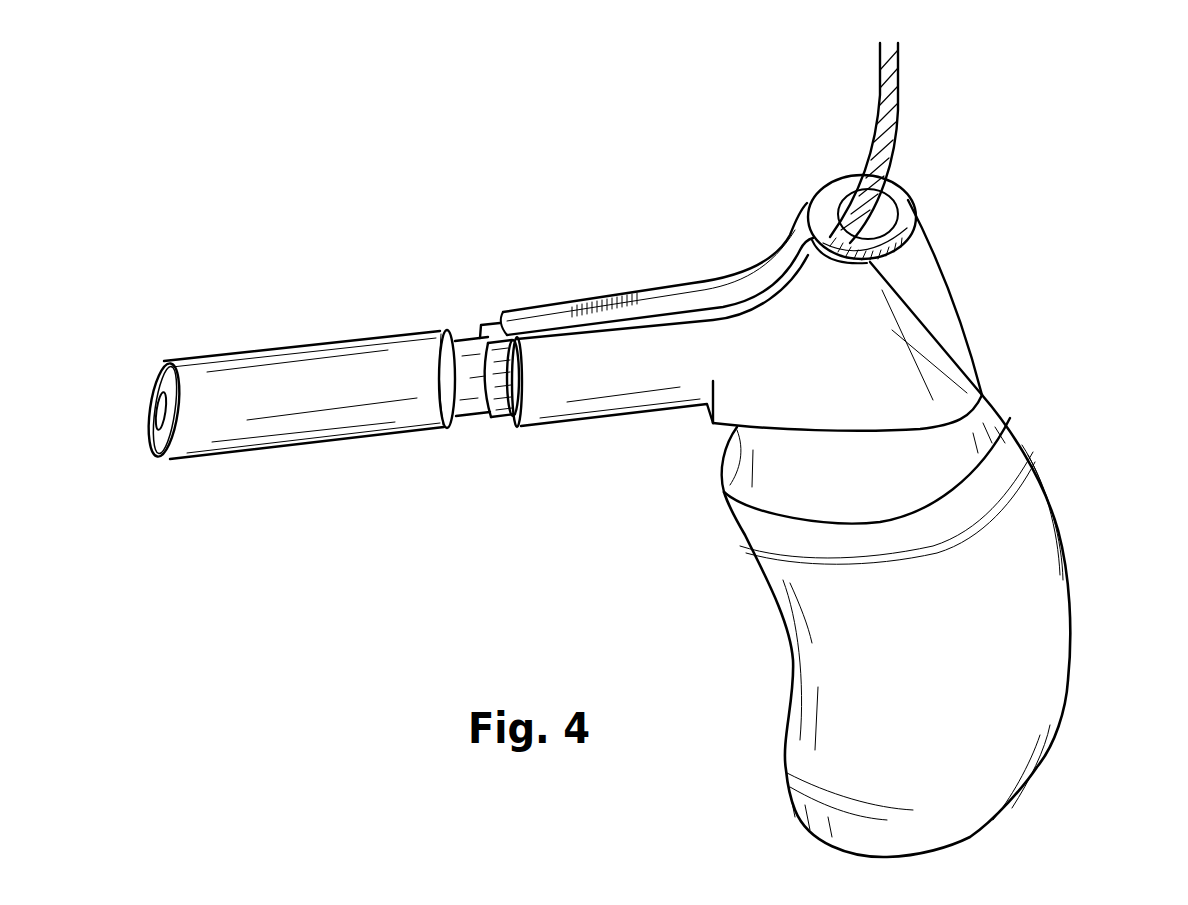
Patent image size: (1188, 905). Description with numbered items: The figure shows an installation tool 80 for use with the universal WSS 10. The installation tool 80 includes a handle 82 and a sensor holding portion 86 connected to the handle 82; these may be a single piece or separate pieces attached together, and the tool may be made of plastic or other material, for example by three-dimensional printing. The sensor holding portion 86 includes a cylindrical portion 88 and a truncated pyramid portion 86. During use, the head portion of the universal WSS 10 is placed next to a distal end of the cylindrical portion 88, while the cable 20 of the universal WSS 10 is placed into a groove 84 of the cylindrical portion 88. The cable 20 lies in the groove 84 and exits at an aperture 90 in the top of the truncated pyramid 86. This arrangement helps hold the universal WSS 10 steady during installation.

The universal WSS 10 is at (314, 304).
The cable 20 is at (890, 128).
The installation tool 80 is at (1046, 408).
The handle 82 is at (1067, 613).
The groove 84 is at (623, 307).
The sensor holding portion 86 is at (943, 283).
The cylindrical portion 88 is at (607, 400).
The aperture 90 is at (885, 212).